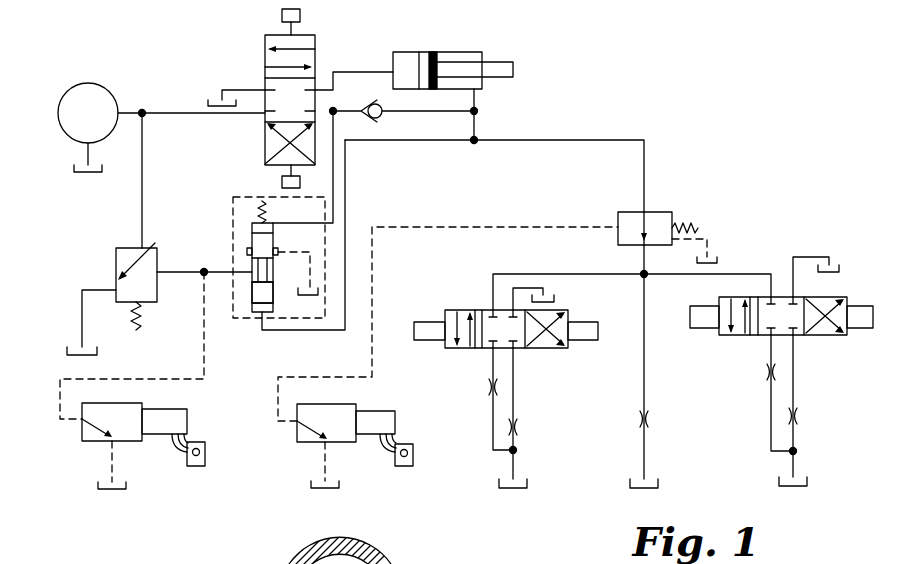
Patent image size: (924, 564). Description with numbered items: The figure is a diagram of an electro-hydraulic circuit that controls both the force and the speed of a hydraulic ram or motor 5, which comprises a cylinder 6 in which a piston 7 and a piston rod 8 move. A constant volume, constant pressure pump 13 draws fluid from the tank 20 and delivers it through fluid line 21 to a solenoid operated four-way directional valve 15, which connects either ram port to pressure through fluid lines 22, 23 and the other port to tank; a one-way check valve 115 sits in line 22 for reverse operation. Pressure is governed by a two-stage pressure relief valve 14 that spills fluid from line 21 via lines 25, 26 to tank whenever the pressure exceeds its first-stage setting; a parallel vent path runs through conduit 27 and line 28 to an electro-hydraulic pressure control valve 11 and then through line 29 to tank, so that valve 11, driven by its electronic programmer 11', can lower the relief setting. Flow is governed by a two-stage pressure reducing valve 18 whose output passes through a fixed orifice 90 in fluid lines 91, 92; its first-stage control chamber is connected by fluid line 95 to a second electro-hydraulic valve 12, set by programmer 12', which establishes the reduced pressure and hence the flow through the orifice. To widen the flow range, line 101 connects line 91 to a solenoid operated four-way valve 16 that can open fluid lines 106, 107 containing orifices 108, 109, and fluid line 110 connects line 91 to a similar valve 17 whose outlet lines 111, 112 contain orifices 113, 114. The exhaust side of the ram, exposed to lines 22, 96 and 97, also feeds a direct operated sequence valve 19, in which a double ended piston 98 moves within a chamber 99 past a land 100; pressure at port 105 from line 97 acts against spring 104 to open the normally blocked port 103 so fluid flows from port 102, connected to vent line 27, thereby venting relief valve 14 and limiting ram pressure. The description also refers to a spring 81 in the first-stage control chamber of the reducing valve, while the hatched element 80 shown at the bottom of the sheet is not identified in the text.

The hydraulic ram or motor 5 is at (471, 48).
The cylinder 6 is at (410, 52).
The piston 7 is at (432, 60).
The piston rod 8 is at (513, 71).
The electro-hydraulic pressure control valve 11 is at (141, 450).
The programmer 11' is at (212, 460).
The electro-hydraulic pressure control valve 12 is at (354, 451).
The programmer 12' is at (421, 466).
The pump 13 is at (97, 87).
The two-stage pressure relief valve 14 is at (158, 245).
The solenoid operated directional valve 15 is at (273, 30).
The solenoid operated four-way valve 16 is at (556, 345).
The solenoid operated four-way valve 17 is at (838, 343).
The two-stage pressure reducing valve 18 is at (662, 210).
The direct operated sequence valve 19 is at (258, 285).
The tank 20 is at (74, 176).
The fluid line 21 is at (173, 112).
The fluid line 22 is at (412, 111).
The fluid line 23 is at (371, 72).
The fluid line 25 is at (144, 171).
The fluid line 26 is at (82, 290).
The conduit 27 is at (182, 272).
The fluid line 28 is at (195, 384).
The fluid line 29 is at (113, 455).
The cover 80 is at (378, 555).
The spring 81 is at (305, 547).
The fixed orifice 90 is at (654, 428).
The fluid line 91 is at (640, 270).
The fluid line 92 is at (647, 377).
The fluid line 95 is at (487, 227).
The fluid line 96 is at (588, 140).
The fluid line 97 is at (345, 280).
The double ended piston 98 is at (252, 297).
The chamber 99 is at (231, 230).
The land 100 is at (273, 269).
The fluid line 101 is at (556, 272).
The port 102 is at (250, 270).
The port 103 is at (280, 254).
The spring 104 is at (270, 211).
The port 105 is at (274, 340).
The fluid line 106 is at (492, 376).
The fluid line 107 is at (515, 374).
The fixed orifice 108 is at (488, 400).
The fixed orifice 109 is at (524, 432).
The fluid line 110 is at (722, 276).
The outlet line 111 is at (770, 372).
The outlet line 112 is at (793, 362).
The restricted orifice 113 is at (768, 394).
The orifice 114 is at (804, 424).
The one-way check valve 115 is at (374, 101).